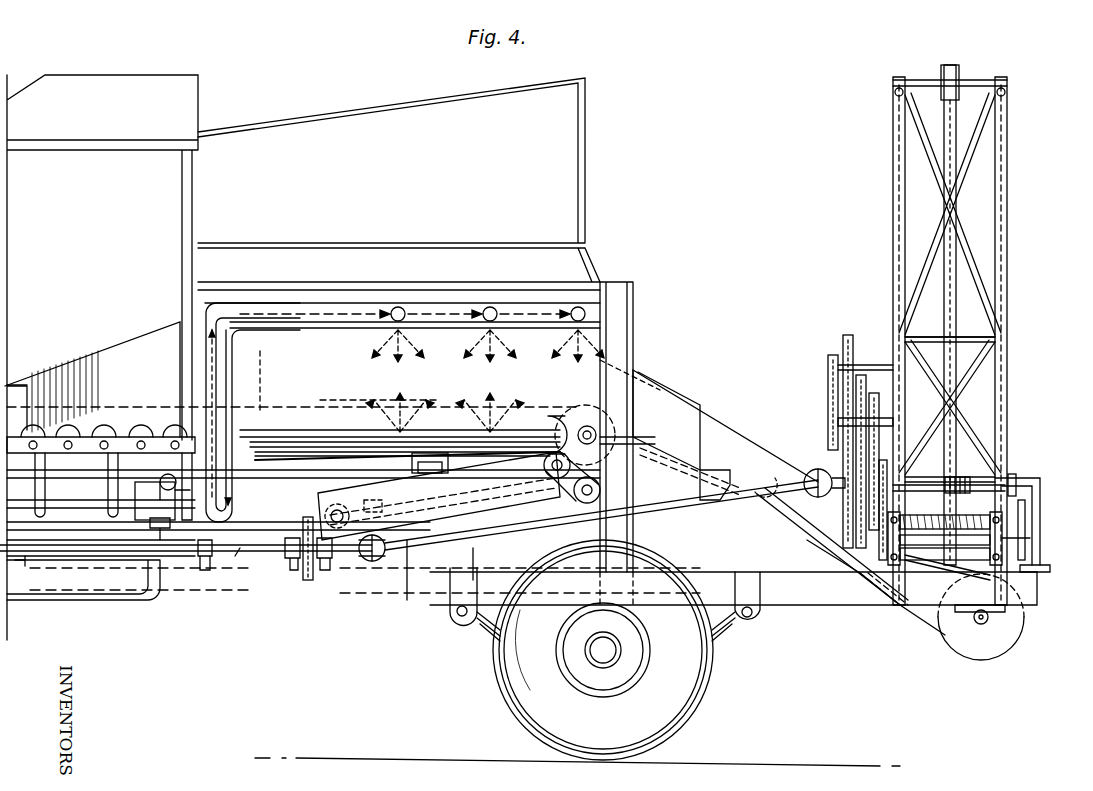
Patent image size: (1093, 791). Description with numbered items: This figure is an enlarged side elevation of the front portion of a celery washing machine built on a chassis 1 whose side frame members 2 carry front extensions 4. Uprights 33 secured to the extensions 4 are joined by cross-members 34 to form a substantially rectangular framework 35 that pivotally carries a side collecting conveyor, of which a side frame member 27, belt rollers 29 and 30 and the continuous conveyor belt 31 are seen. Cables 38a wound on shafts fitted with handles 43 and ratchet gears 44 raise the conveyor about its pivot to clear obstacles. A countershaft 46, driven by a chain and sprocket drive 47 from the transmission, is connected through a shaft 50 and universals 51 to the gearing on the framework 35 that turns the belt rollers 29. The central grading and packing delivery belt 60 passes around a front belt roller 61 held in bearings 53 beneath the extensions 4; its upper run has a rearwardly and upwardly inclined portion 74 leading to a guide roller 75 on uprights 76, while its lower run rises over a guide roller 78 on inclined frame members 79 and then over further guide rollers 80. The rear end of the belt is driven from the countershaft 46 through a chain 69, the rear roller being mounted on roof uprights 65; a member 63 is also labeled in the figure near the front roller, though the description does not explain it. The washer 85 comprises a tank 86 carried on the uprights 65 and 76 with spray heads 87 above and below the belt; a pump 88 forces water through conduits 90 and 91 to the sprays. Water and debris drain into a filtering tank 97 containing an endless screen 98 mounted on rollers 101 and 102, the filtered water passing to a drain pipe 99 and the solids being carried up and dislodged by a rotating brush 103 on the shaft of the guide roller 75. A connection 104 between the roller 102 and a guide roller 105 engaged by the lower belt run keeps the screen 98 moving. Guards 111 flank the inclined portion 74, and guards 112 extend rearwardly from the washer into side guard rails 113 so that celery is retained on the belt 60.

The chassis 1 is at (276, 588).
The side frame members 2 is at (478, 595).
The front extensions 4 is at (866, 592).
The side frame member 27 is at (1036, 500).
The belt roller 29 is at (922, 522).
The belt roller 30 is at (897, 535).
The conveyor belt 31 is at (960, 520).
The uprights 33 is at (893, 280).
The cross-members 34 is at (955, 232).
The framework 35 is at (1010, 118).
The cables 38a is at (955, 340).
The handles 43 is at (1040, 566).
The ratchet gears 44 is at (1016, 478).
The countershaft 46 is at (240, 552).
The chain and sprocket drive 47 is at (302, 517).
The shaft 50 is at (675, 500).
The universals 51 is at (372, 562).
The bearings 53 is at (1025, 517).
The grading and packing delivery conveyor belt 60 is at (568, 420).
The front belt roller 61 is at (1025, 637).
The rod 63 is at (935, 620).
The roof uprights 65 is at (185, 222).
The chain 69 is at (40, 595).
The inclined portion 74 is at (678, 438).
The guide roller 75 is at (590, 404).
The uprights 76 is at (636, 333).
The guide roller 78 is at (700, 491).
The inclined frame members 79 is at (805, 515).
The guide rollers 80 is at (135, 484).
The washer 85 is at (548, 345).
The wash tank 86 is at (312, 452).
The spray heads 87 is at (395, 302).
The pump 88 is at (168, 523).
The conduit 90 is at (232, 372).
The conduit 91 is at (245, 428).
The filtering tank 97 is at (418, 579).
The screen 98 is at (415, 462).
The drain pipe 99 is at (473, 548).
The roller 101 is at (439, 496).
The roller 102 is at (520, 472).
The rotating brush 103 is at (655, 388).
The chain and sprocket or belt and pulley connection 104 is at (552, 483).
The guide roller 105 is at (601, 515).
The guards 111 is at (752, 432).
The guards 112 is at (102, 360).
The side guard rails 113 is at (14, 390).